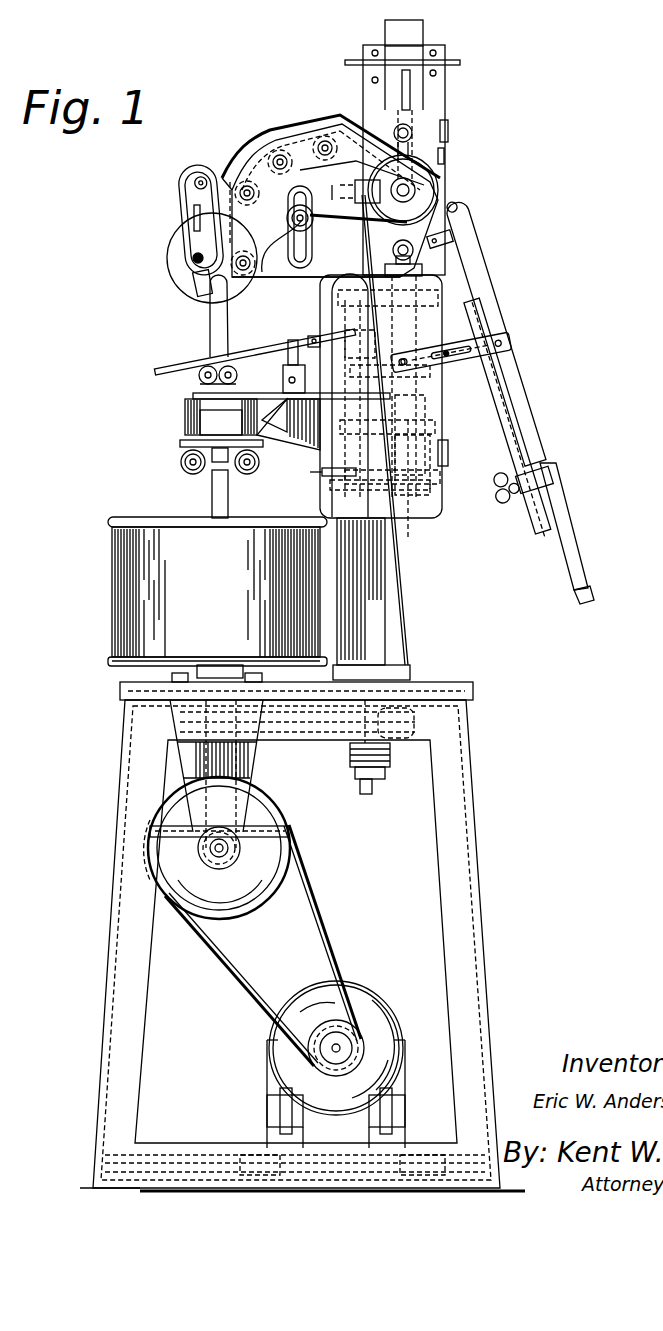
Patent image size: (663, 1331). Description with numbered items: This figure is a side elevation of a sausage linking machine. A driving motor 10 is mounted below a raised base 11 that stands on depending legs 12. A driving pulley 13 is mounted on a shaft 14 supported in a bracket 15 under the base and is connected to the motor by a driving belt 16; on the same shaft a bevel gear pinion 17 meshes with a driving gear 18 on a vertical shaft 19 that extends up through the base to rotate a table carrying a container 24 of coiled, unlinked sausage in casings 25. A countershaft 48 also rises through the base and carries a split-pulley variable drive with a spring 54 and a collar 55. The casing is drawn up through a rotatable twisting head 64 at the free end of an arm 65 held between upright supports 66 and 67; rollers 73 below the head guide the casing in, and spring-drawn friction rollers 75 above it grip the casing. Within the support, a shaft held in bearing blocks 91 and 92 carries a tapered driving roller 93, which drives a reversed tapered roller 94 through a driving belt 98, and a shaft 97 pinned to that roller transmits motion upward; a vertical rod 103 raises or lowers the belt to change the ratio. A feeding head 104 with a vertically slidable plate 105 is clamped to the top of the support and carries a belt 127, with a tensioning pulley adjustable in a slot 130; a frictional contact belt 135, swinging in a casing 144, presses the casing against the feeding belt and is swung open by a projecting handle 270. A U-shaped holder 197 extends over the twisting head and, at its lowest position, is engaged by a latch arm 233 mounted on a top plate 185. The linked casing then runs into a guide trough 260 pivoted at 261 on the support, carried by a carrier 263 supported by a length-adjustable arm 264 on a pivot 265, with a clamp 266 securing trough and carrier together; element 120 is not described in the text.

The driving motor 10 is at (372, 1002).
The raised base 11 is at (440, 682).
The legs 12 is at (110, 995).
The driving pulley 13 is at (282, 852).
The shaft 14 is at (232, 856).
The bracket 15 is at (252, 762).
The driving belt 16 is at (323, 928).
The bevel gear pinion 17 is at (212, 852).
The driving gear 18 is at (285, 826).
The vertical shaft 19 is at (245, 812).
The container 24 is at (122, 591).
The casings 25 is at (288, 128).
The countershaft 48 is at (372, 786).
The spring 54 is at (380, 758).
The collar 55 is at (356, 776).
The twisting head 64 is at (200, 395).
The arm 65 is at (190, 420).
The upright support 66 is at (446, 105).
The upright support 67 is at (400, 580).
The rollers 73 is at (181, 463).
The friction rollers 75 is at (270, 380).
The bearing block 91 is at (419, 520).
The bearing block 92 is at (403, 312).
The driving roller 93 is at (318, 448).
The reversed tapered roller 94 is at (418, 462).
The shaft 97 is at (411, 82).
The driving belt 98 is at (382, 475).
The vertical rod 103 is at (365, 255).
The feeding head 104 is at (228, 177).
The plate 105 is at (415, 33).
The block 120 is at (342, 186).
The belt 127 is at (347, 222).
The slot 130 is at (305, 245).
The frictional contact belt 135 is at (185, 203).
The casing 144 is at (167, 252).
The top plate 185 is at (268, 408).
The holder 197 is at (173, 368).
The arm 233 is at (236, 380).
The guide trough 260 is at (462, 254).
The pivot 261 is at (452, 230).
The carrier 263 is at (500, 425).
The arm 264 is at (456, 358).
The pivot 265 is at (407, 370).
The clamp 266 is at (518, 490).
The projecting handle 270 is at (196, 221).